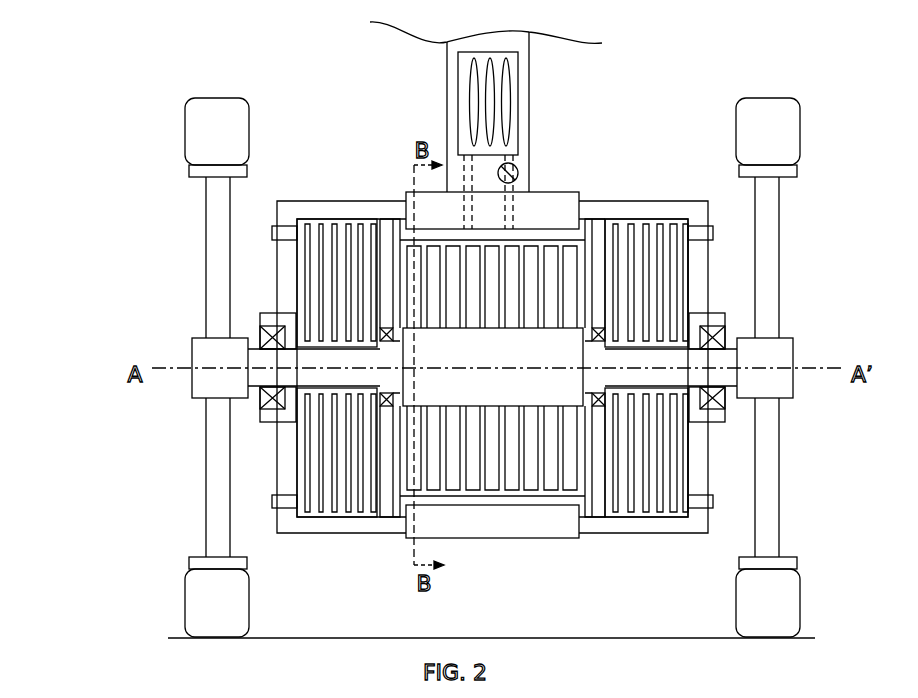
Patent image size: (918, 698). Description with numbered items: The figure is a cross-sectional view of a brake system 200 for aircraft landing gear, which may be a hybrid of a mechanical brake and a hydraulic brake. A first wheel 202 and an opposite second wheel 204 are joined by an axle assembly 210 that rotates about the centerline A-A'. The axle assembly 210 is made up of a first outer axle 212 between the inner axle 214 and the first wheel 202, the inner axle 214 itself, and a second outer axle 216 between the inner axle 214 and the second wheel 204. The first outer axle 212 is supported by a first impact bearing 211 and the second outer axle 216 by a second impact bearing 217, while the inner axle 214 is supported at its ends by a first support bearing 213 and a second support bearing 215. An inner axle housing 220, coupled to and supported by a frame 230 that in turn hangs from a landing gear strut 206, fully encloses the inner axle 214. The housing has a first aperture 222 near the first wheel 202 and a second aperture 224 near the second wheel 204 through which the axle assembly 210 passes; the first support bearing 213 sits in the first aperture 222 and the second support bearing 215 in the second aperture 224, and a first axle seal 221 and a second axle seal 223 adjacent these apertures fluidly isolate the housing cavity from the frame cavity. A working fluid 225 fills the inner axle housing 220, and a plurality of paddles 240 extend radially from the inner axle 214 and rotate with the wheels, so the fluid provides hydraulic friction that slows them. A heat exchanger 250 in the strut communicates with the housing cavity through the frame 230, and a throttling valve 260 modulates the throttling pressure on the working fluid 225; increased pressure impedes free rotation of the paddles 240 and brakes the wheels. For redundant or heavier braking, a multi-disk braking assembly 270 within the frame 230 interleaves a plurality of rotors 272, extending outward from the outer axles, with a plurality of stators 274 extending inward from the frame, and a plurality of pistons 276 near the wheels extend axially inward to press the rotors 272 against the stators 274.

The brake system 200 is at (146, 82).
The first wheel 202 is at (218, 200).
The second wheel 204 is at (766, 215).
The landing gear strut 206 is at (529, 57).
The axle assembly 210 is at (362, 340).
The first impact bearing 211 is at (265, 398).
The first outer axle 212 is at (200, 378).
The first support bearing 213 is at (381, 400).
The inner axle 214 is at (500, 363).
The second support bearing 215 is at (600, 400).
The second outer axle 216 is at (780, 380).
The second impact bearing 217 is at (720, 402).
The inner axle housing 220 is at (598, 493).
The first axle seal 221 is at (395, 408).
The first aperture 222 is at (386, 327).
The second axle seal 223 is at (588, 407).
The second aperture 224 is at (596, 326).
The working fluid 225 is at (557, 238).
The frame 230 is at (643, 207).
The plurality of paddles 240 is at (489, 484).
The heat exchanger 250 is at (459, 99).
The throttling valve 260 is at (506, 165).
The multi-disk braking assembly 270 is at (302, 280).
The plurality of rotors 272 is at (312, 242).
The plurality of stators 274 is at (334, 510).
The plurality of pistons 276 is at (272, 235).